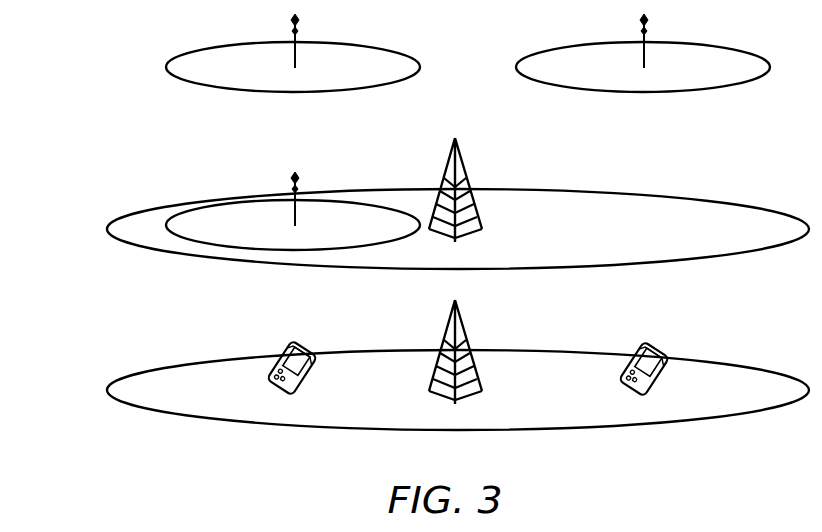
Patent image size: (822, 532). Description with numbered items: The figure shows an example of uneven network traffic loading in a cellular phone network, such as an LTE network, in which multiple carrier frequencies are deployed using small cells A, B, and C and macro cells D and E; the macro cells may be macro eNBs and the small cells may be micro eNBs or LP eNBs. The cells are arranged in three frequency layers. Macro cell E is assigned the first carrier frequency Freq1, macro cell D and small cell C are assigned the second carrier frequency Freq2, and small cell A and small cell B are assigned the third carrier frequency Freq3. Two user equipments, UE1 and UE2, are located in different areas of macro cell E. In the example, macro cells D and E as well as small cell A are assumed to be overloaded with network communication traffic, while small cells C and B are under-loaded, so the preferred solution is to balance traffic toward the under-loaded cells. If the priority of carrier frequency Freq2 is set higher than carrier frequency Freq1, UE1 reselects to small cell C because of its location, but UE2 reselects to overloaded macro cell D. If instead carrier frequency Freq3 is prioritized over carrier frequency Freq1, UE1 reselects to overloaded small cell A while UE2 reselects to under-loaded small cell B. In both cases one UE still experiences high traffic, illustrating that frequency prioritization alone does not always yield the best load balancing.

The small cell A is at (293, 53).
The small cell B is at (643, 53).
The small cell C is at (293, 211).
The macro cell D is at (783, 229).
The macro cell E is at (779, 390).
The UE UE1 is at (305, 377).
The UE UE2 is at (658, 378).
The carrier Frequency 1 Freq1 is at (413, 365).
The carrier Frequency 2 Freq2 is at (413, 203).
The carrier Frequency 3 Freq3 is at (68, 72).